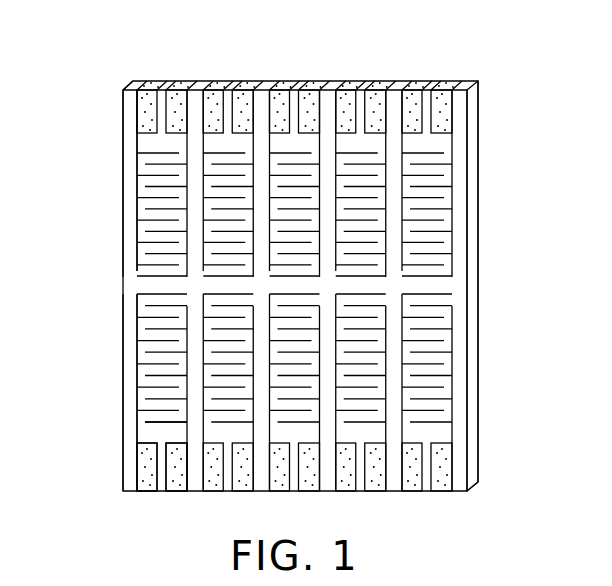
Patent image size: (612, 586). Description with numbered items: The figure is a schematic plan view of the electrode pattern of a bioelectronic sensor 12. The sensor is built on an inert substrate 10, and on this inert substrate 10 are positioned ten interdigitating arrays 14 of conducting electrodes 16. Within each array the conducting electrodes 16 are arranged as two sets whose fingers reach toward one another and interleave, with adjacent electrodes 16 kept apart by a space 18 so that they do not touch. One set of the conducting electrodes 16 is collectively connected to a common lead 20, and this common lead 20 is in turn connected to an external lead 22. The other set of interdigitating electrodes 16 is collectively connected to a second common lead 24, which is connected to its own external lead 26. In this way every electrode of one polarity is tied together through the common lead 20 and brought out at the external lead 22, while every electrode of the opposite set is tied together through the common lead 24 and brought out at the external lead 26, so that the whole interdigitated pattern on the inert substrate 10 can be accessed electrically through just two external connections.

The inert substrate 10 is at (488, 256).
The bioelectronic sensor 12 is at (92, 87).
The interdigitating arrays 14 is at (446, 74).
The conducting electrodes 16 is at (452, 296).
The space 18 is at (132, 268).
The common lead 20 is at (135, 350).
The external lead 22 is at (148, 492).
The common lead 24 is at (185, 432).
The external lead 26 is at (173, 492).